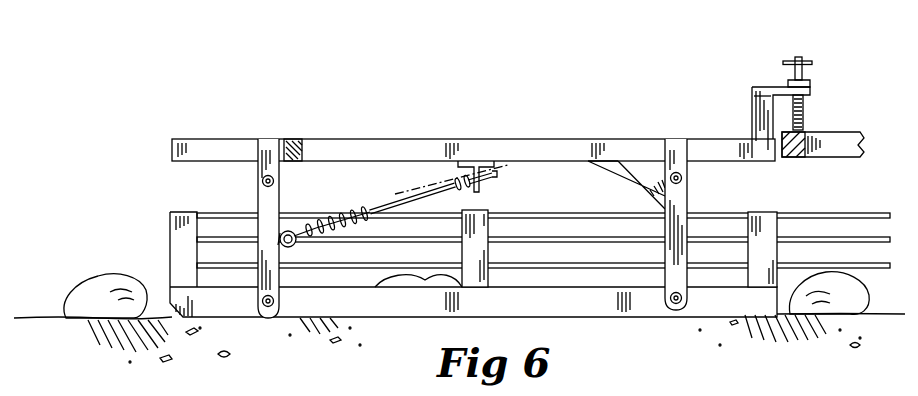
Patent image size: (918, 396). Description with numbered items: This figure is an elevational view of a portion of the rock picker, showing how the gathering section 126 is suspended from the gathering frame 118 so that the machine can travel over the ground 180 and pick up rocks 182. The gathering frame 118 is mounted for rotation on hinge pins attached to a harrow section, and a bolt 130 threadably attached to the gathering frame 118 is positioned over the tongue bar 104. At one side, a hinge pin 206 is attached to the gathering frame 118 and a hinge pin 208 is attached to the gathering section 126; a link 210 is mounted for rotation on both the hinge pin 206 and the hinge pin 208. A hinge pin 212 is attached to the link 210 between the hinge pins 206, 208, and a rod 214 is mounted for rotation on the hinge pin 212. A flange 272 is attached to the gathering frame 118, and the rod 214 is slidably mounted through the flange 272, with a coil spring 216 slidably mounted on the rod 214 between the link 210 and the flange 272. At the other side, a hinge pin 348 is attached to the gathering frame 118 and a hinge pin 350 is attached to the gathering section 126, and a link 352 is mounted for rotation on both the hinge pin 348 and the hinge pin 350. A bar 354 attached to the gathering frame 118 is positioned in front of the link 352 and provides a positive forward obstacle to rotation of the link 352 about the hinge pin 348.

The tongue bar 104 is at (836, 131).
The gathering frame 118 is at (380, 108).
The gathering section 126 is at (170, 219).
The bolt 130 is at (797, 58).
The ground 180 is at (53, 318).
The rocks 182 is at (118, 274).
The hinge pin 206 is at (262, 180).
The hinge pin 208 is at (266, 307).
The link 210 is at (260, 202).
The hinge pin 212 is at (297, 243).
The rod 214 is at (498, 173).
The coil spring 216 is at (368, 210).
The flange 272 is at (457, 181).
The hinge pin 348 is at (688, 178).
The hinge pin 350 is at (672, 306).
The link 352 is at (663, 280).
The bar 354 is at (628, 180).